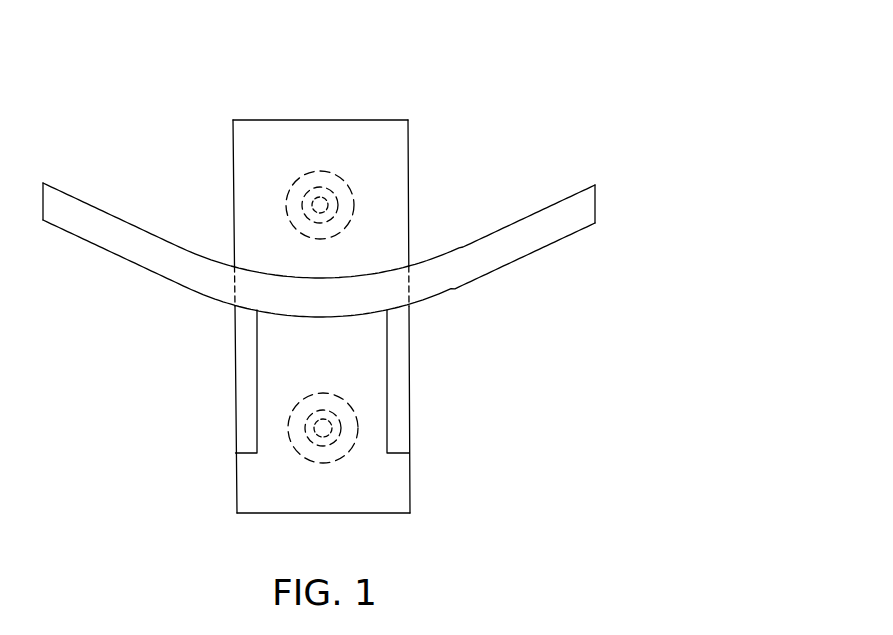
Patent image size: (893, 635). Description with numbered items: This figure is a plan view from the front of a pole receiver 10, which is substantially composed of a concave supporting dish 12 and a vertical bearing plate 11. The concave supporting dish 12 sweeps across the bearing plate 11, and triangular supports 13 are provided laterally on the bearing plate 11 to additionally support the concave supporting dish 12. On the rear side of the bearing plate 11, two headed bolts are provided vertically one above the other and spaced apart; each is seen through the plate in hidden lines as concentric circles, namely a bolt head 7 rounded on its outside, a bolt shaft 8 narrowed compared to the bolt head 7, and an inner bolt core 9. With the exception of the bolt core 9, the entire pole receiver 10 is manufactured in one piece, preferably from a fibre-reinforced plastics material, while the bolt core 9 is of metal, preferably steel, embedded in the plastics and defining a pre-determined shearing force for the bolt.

The pole receiver 10 is at (319, 260).
The bearing plate 11 is at (258, 128).
The concave supporting dish 12 is at (520, 252).
The triangular supports 13 is at (247, 352).
The bolt head 7 is at (287, 207).
The bolt shaft 8 is at (327, 188).
The bolt core 9 is at (330, 207).